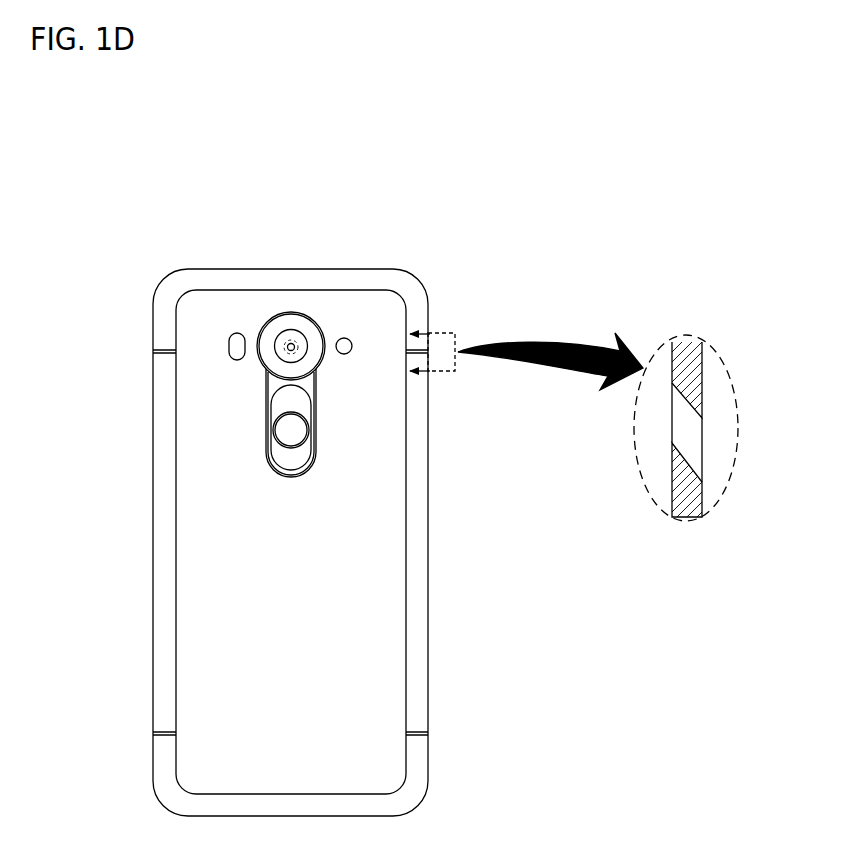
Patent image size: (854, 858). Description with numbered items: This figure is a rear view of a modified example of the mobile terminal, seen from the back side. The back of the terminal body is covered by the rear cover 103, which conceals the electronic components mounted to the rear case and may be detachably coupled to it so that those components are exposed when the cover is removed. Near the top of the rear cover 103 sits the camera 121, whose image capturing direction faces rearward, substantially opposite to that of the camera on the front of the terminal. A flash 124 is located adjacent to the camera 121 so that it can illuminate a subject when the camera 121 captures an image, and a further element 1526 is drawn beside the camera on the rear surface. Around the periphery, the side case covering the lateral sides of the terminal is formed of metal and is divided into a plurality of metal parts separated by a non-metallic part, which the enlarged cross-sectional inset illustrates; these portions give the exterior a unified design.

The rear cover 103 is at (190, 397).
The camera 121 is at (292, 338).
The flash 124 is at (345, 337).
The sensor 1526 is at (237, 333).